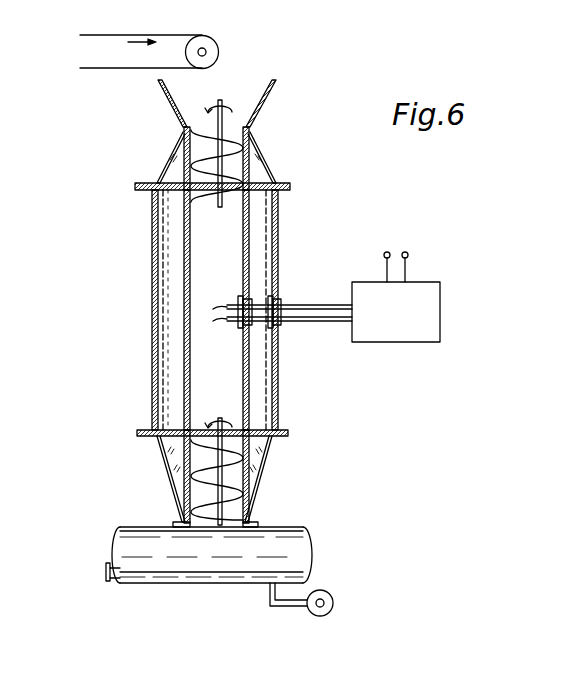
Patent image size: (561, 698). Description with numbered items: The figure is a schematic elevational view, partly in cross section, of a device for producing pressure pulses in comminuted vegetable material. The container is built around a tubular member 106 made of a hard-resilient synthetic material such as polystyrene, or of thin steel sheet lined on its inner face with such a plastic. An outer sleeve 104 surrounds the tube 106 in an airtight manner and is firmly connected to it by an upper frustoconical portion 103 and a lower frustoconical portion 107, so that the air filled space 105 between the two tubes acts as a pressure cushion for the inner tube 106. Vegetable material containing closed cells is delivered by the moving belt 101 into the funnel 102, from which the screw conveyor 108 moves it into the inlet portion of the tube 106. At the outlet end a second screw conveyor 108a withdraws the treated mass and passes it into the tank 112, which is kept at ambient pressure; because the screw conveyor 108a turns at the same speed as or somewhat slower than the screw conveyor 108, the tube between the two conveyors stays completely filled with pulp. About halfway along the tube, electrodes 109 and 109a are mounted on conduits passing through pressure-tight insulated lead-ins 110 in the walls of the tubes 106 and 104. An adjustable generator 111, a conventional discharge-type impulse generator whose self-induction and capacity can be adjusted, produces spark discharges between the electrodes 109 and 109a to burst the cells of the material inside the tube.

The moving belt 101 is at (95, 34).
The funnel 102 is at (258, 90).
The frustoconical portion 103 is at (252, 156).
The outer sleeve 104 is at (270, 236).
The air filled space 105 is at (262, 268).
The tubular member 106 is at (247, 207).
The frustoconical portion 107 is at (255, 465).
The screw conveyor 108 is at (183, 140).
The screw conveyor 108a is at (192, 485).
The electrode 109 is at (229, 329).
The electrode 109a is at (230, 302).
The insulating bushings 110 is at (253, 329).
The adjustable generator 111 is at (432, 312).
The tank 112 is at (190, 572).